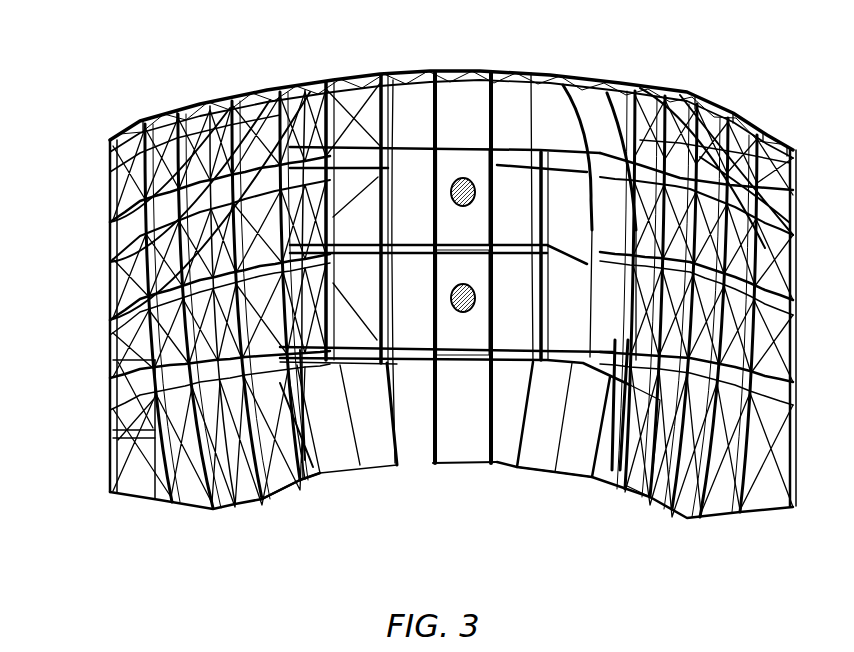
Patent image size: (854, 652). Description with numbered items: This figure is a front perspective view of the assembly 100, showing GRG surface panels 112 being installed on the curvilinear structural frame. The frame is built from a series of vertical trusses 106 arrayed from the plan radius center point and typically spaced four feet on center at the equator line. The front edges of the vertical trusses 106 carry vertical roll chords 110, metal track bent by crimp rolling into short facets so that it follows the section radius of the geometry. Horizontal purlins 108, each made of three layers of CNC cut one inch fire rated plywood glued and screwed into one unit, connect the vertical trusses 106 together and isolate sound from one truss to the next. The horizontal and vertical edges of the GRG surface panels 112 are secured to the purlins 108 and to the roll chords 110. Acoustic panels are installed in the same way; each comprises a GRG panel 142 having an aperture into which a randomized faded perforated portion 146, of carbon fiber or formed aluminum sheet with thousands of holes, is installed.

The wall assembly 100 is at (757, 62).
The vertical truss 106 is at (115, 457).
The purlin 108 is at (260, 92).
The vertical roll chord 110 is at (295, 458).
The GRG surface panel 112 is at (445, 117).
The GRG panel 142 is at (447, 234).
The randomized faded perforated portion 146 is at (477, 190).